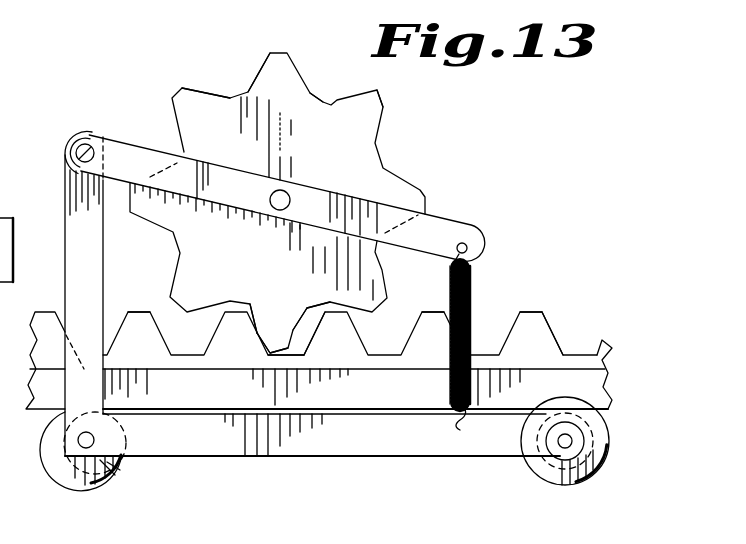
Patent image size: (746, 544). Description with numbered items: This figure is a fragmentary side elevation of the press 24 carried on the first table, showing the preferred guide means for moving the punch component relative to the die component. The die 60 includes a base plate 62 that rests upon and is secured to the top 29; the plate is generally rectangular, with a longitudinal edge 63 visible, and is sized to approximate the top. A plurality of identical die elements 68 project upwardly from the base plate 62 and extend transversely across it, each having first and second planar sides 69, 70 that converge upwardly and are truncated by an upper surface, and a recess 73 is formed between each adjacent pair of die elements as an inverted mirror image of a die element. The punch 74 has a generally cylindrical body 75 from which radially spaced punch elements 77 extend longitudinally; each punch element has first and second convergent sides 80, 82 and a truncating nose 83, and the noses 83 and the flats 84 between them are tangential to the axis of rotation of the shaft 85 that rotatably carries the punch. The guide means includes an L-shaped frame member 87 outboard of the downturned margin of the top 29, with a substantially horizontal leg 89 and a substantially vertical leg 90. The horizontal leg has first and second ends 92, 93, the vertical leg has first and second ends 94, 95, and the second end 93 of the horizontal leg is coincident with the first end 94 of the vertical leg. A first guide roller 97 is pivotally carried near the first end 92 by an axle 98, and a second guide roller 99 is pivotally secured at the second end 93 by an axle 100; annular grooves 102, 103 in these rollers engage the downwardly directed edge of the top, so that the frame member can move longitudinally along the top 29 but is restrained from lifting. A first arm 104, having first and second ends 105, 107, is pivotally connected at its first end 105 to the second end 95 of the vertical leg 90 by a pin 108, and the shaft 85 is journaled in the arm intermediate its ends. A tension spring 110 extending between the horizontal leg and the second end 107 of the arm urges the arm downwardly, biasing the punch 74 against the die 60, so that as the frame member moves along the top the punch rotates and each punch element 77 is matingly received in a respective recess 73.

The press 24 is at (472, 196).
The top 29 is at (378, 407).
The die 60 is at (552, 325).
The base plate 62 is at (603, 347).
The longitudinal edge 63 is at (315, 358).
The die elements 68 is at (133, 312).
The first planar side 69 is at (310, 325).
The second planar side 70 is at (255, 338).
The recess 73 is at (390, 345).
The punch 74 is at (274, 153).
The cylindrical body 75 is at (228, 98).
The punch elements 77 is at (267, 66).
The first convergent side 80 is at (263, 310).
The second convergent side 82 is at (297, 313).
The truncating nose 83 is at (277, 347).
The flats 84 is at (325, 102).
The shaft 85 is at (285, 197).
The L-shaped frame member 87 is at (180, 450).
The horizontal leg 89 is at (347, 455).
The vertical leg 90 is at (75, 230).
The first end 92 is at (596, 472).
The second end 93 is at (77, 462).
The first end 94 is at (70, 438).
The second end 95 is at (76, 132).
The first guide roller 97 is at (547, 478).
The axle 98 is at (563, 434).
The second guide roller 99 is at (100, 473).
The axle 100 is at (94, 440).
The annular groove 102 is at (530, 462).
The annular groove 103 is at (115, 473).
The first arm 104 is at (133, 164).
The first end 105 is at (66, 155).
The second end 107 is at (482, 238).
The pin 108 is at (100, 132).
The tension spring 110 is at (448, 357).